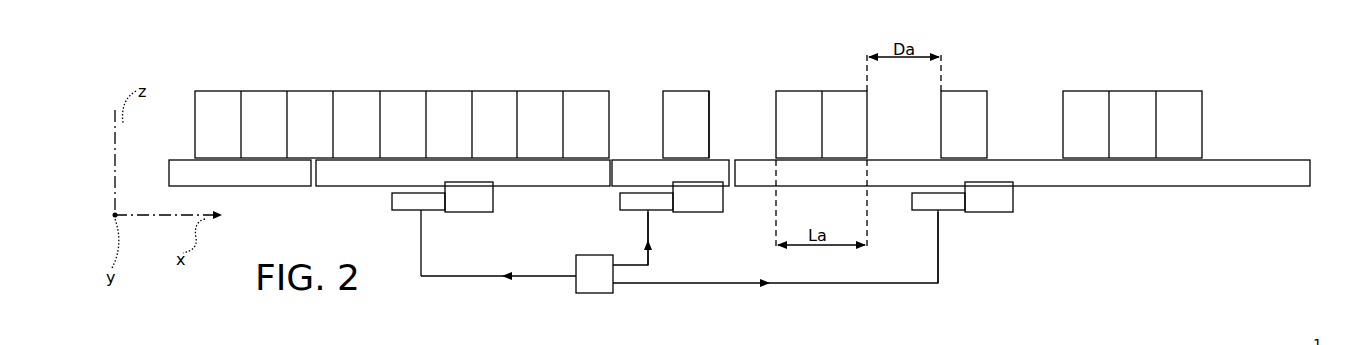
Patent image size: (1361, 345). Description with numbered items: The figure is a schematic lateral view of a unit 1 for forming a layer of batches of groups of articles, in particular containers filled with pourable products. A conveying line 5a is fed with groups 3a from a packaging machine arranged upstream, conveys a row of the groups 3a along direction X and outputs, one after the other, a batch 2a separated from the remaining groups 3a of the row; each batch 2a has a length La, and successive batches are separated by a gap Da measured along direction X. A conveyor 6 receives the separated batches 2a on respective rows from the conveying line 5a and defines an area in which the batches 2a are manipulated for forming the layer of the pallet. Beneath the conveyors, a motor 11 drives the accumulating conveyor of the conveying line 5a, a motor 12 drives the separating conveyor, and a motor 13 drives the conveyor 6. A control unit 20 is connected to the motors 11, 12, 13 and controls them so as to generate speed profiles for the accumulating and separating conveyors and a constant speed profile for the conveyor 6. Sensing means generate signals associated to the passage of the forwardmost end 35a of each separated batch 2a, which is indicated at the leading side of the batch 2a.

The unit 1 is at (1306, 96).
The batch 2a is at (691, 79).
The group 3a is at (445, 82).
The conveying line 5a is at (172, 116).
The forwardmost end 35a is at (716, 111).
The conveyor 6 is at (1182, 172).
The motor 11 is at (488, 205).
The motor 12 is at (717, 203).
The motor 13 is at (1013, 203).
The control unit 20 is at (588, 266).